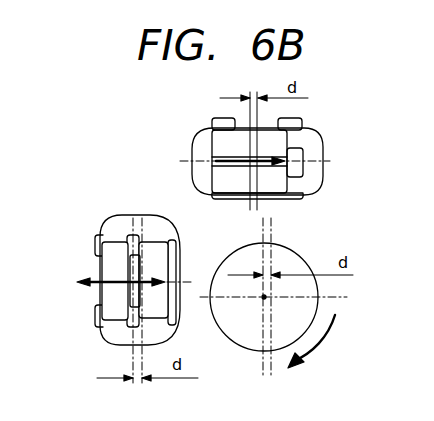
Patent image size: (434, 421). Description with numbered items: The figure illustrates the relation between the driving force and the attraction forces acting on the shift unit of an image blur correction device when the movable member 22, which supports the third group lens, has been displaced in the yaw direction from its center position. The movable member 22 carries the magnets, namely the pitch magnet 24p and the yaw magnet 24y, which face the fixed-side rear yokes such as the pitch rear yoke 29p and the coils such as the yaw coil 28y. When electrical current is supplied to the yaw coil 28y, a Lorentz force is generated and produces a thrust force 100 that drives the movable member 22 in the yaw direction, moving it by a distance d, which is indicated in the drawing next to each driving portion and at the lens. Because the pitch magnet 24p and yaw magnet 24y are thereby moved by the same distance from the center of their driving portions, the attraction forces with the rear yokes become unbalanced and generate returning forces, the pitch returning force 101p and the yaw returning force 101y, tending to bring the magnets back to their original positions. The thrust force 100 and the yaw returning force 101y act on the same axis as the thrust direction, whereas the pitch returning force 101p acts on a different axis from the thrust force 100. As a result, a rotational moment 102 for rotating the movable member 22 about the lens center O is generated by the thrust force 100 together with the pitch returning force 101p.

The thrust force 100 is at (97, 275).
The pitch magnet 24p is at (218, 141).
The yaw magnet 24y is at (120, 243).
The yaw coil 28y is at (120, 332).
The pitch rear yoke 29p is at (220, 120).
The returning force in the pitch direction 101p is at (263, 158).
The returning force in the yaw direction 101y is at (157, 232).
The rotational moment 102 is at (323, 340).
The movable member 22 is at (297, 257).